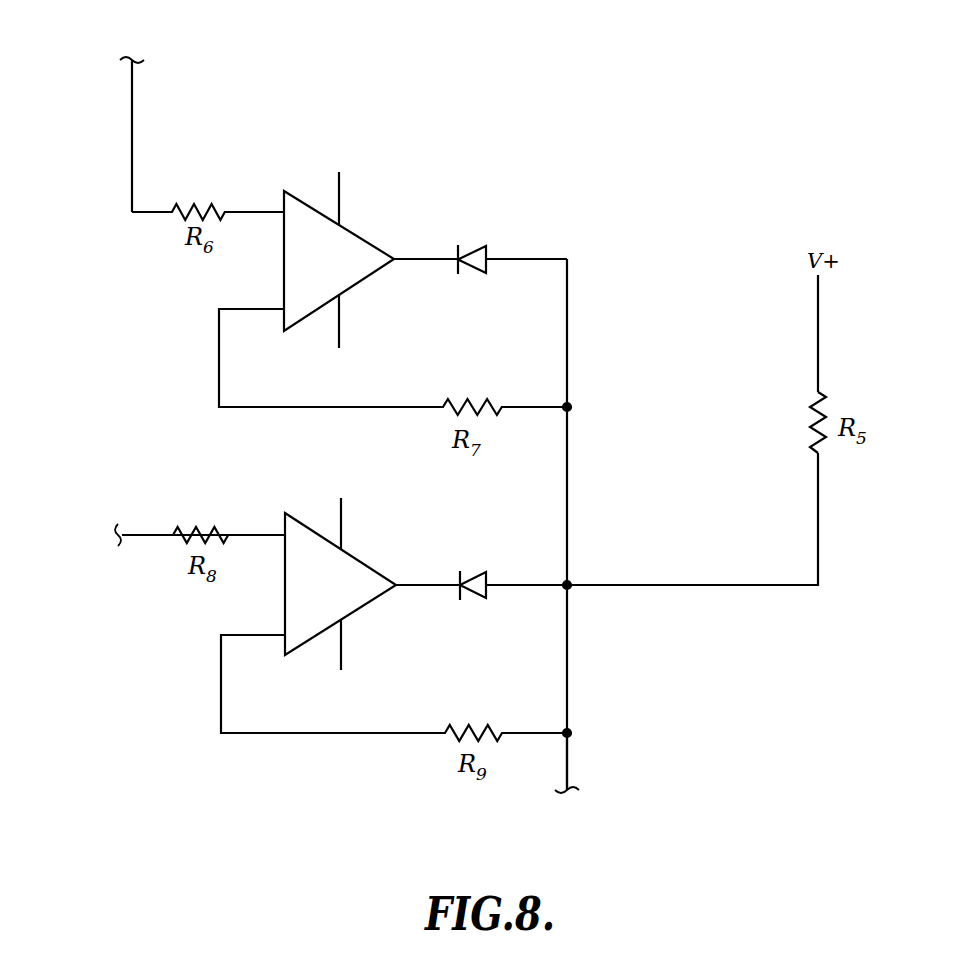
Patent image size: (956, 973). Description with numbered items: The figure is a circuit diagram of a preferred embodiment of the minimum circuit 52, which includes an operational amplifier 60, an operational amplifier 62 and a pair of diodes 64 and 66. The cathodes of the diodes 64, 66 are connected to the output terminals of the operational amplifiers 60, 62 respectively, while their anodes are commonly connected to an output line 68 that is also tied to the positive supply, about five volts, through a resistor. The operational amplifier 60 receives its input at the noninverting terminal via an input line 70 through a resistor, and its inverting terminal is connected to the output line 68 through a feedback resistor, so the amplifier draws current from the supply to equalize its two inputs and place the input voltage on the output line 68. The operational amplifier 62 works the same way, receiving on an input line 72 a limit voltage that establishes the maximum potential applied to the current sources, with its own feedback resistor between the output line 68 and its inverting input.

The minimum circuit 52 is at (573, 77).
The operational amplifier 60 is at (366, 237).
The operational amplifier 62 is at (368, 566).
The diode 64 is at (487, 253).
The diode 66 is at (487, 578).
The output line 68 is at (569, 756).
The input line 70 is at (132, 134).
The input line 72 is at (150, 533).